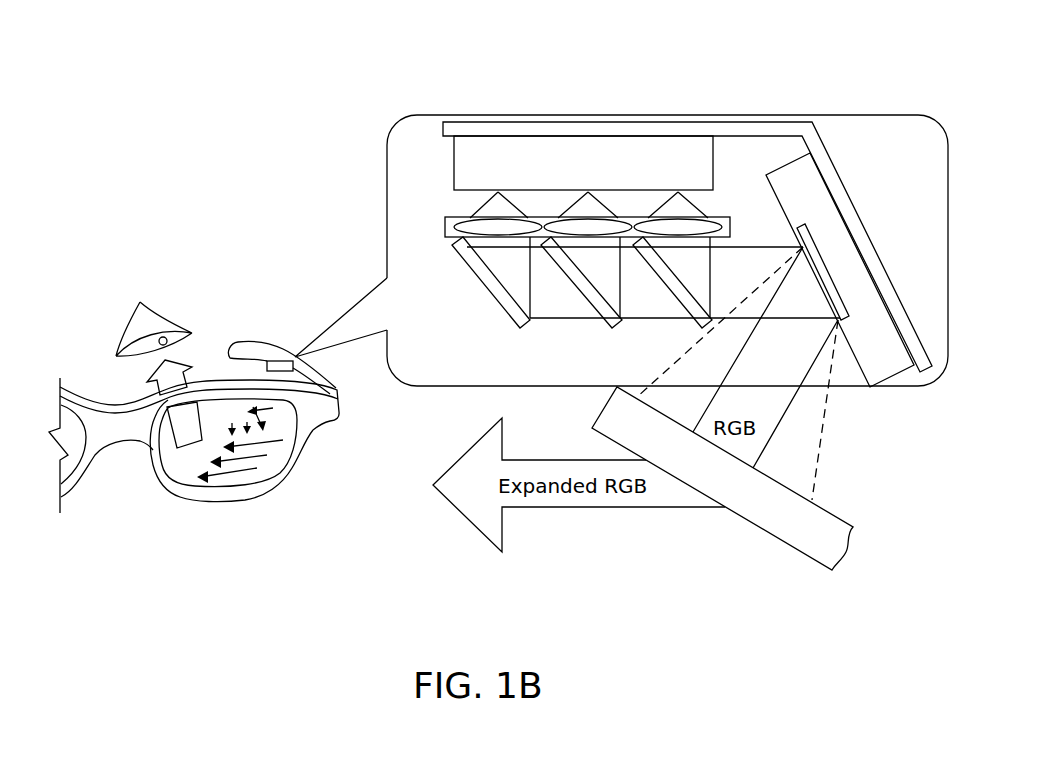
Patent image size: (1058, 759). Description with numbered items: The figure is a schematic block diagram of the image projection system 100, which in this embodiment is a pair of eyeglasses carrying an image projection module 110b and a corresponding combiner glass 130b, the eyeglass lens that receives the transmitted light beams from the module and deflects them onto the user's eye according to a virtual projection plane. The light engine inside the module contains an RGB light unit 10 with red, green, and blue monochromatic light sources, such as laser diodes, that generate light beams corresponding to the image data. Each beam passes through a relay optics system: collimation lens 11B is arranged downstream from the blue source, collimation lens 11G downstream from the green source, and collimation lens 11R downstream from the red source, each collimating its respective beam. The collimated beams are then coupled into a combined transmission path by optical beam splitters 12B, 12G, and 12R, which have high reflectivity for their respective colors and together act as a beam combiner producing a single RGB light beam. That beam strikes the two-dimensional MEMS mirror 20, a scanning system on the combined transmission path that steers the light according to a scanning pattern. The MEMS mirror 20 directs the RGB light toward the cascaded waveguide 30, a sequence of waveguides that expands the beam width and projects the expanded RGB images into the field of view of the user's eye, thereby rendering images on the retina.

The image projection system 100 is at (290, 84).
The RGB light unit 10 is at (453, 167).
The collimation lens 11B is at (445, 227).
The collimation lens 11G is at (620, 223).
The collimation lens 11R is at (722, 218).
The optical beam splitter 12B is at (471, 276).
The optical beam splitter 12G is at (585, 295).
The optical beam splitter 12R is at (655, 276).
The 2D MEMS mirror 20 is at (900, 387).
The cascaded waveguide 30 is at (845, 543).
The image projection module 110b is at (832, 116).
The combiner glass 130b is at (260, 467).